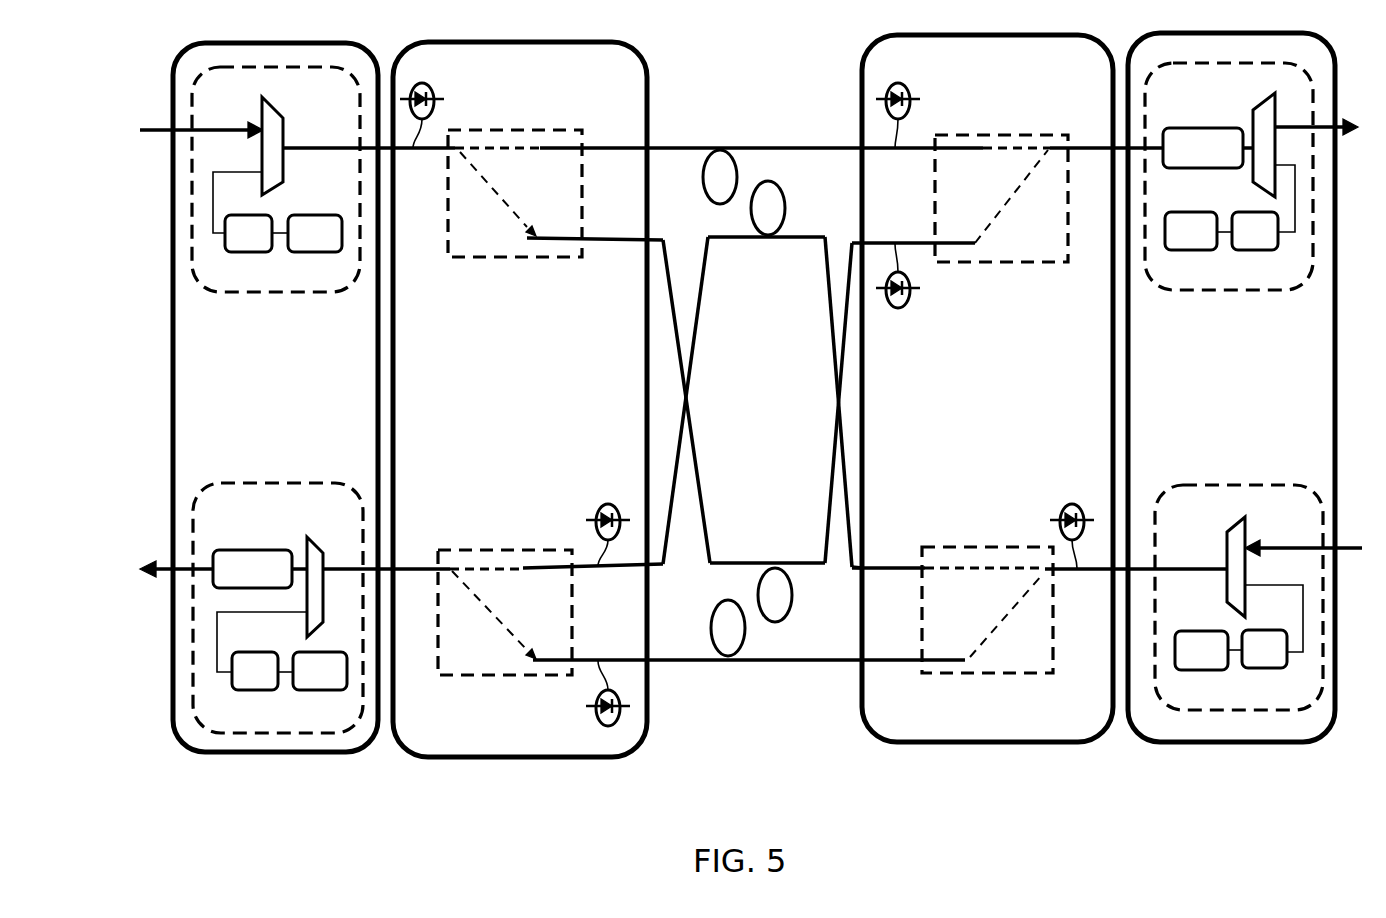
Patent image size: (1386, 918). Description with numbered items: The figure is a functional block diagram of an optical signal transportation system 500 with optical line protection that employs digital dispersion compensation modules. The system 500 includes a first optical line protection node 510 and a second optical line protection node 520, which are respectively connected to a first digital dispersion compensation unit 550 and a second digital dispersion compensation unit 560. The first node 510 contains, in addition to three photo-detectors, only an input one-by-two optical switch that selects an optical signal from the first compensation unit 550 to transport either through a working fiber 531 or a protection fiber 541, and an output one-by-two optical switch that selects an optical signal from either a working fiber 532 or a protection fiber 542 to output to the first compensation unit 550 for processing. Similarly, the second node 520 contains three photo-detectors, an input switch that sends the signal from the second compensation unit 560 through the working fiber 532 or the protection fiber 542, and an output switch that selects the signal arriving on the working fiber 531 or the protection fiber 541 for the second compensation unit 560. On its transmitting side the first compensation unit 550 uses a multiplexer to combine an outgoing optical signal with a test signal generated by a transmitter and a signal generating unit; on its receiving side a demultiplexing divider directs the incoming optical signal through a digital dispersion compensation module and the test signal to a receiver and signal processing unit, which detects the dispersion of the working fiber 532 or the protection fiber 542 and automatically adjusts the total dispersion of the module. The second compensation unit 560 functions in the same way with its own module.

The optical signal transportation system 500 is at (832, 759).
The first OLP node 510 is at (530, 757).
The second OLP node 520 is at (993, 742).
The working fiber 531 is at (690, 148).
The working fiber 532 is at (792, 236).
The protection fiber 541 is at (800, 567).
The protection fiber 542 is at (662, 660).
The first digital dispersion compensation unit 550 is at (272, 752).
The second digital dispersion compensation unit 560 is at (1213, 742).